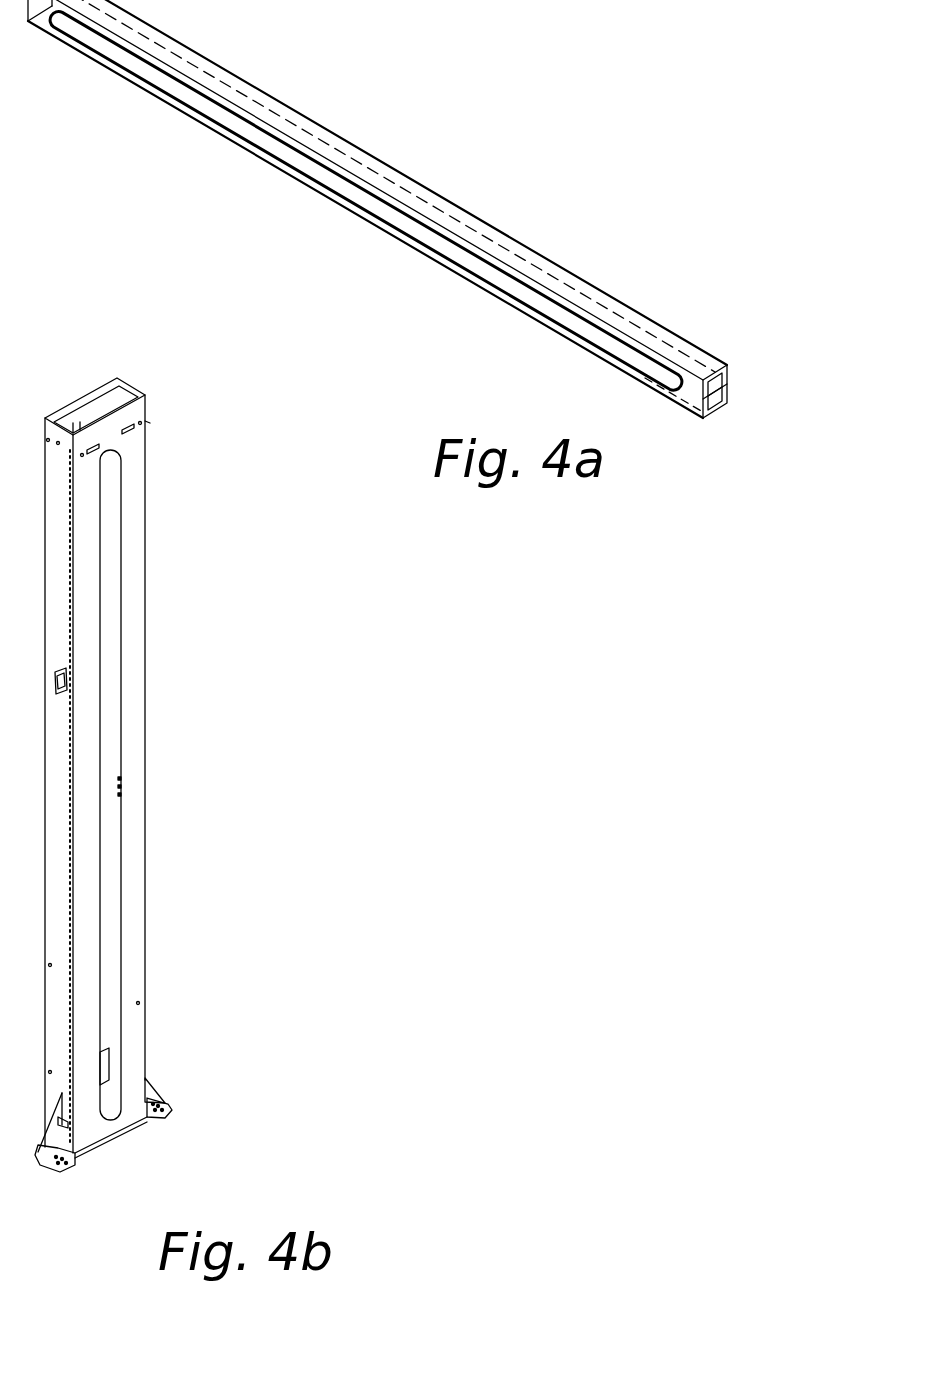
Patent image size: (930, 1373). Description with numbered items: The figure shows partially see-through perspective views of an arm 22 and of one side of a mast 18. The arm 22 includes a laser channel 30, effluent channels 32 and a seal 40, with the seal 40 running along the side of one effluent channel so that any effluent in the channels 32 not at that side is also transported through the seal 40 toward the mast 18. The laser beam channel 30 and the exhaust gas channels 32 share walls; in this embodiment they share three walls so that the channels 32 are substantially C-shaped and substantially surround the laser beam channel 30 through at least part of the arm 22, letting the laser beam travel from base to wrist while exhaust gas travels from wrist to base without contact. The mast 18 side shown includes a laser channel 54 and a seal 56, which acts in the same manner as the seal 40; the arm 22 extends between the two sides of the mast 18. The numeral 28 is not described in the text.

In FIG. 4A, the arm 22 is at (422, 238).
In FIG. 4A, the hollow beam body 28 is at (445, 293).
In FIG. 4A, the seal 40 is at (360, 198).
In FIG. 4A, the effluent channels 32 is at (710, 378).
In FIG. 4A, the laser channel 30 is at (712, 400).
In FIG. 4B, the mast 18 is at (178, 745).
In FIG. 4B, the laser channel 54 is at (110, 407).
In FIG. 4B, the seal 56 is at (107, 763).